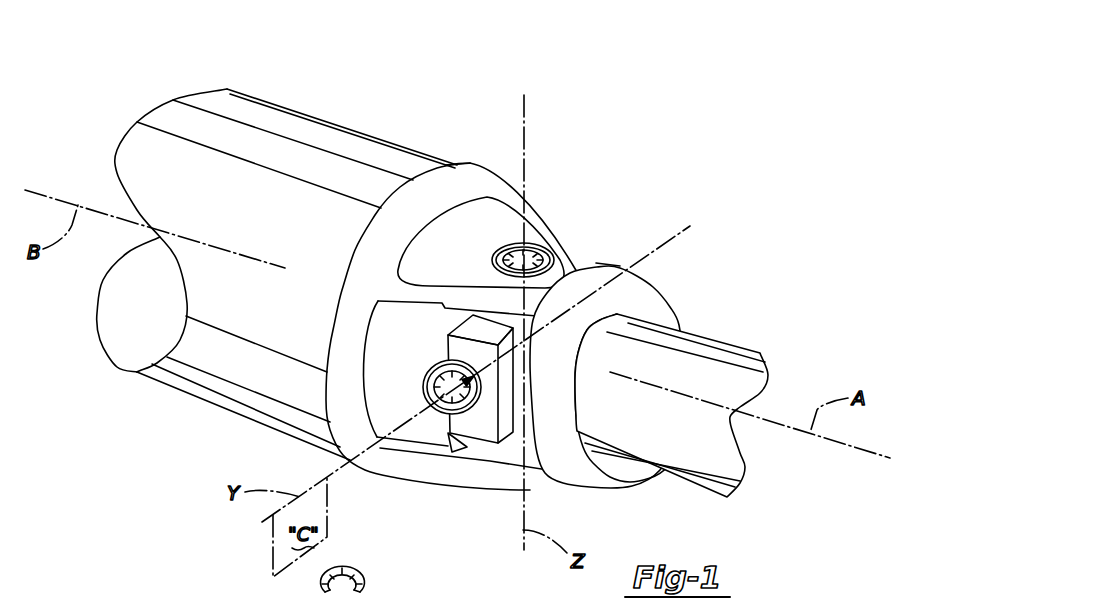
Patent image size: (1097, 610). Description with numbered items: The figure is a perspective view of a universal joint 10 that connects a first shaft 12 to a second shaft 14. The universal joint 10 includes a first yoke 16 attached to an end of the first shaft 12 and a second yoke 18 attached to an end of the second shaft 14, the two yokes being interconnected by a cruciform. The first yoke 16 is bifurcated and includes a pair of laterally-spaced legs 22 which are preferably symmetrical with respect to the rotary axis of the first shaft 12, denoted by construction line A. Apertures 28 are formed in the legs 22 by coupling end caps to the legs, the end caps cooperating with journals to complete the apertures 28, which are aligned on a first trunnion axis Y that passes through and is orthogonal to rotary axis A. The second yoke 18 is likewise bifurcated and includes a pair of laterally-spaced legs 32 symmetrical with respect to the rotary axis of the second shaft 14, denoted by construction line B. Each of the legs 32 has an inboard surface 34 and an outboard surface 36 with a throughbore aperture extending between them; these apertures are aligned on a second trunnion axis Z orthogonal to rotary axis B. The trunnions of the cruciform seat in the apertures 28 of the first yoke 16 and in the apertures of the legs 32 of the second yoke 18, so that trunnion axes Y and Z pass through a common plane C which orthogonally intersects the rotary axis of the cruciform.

The universal joint 10 is at (628, 93).
The first shaft 12 is at (663, 446).
The second shaft 14 is at (258, 132).
The first yoke 16 is at (475, 425).
The second yoke 18 is at (490, 232).
The legs 22 is at (470, 333).
The apertures 28 is at (447, 398).
The legs 32 is at (512, 477).
The inboard surface 34 is at (500, 453).
The outboard surface 36 is at (463, 253).